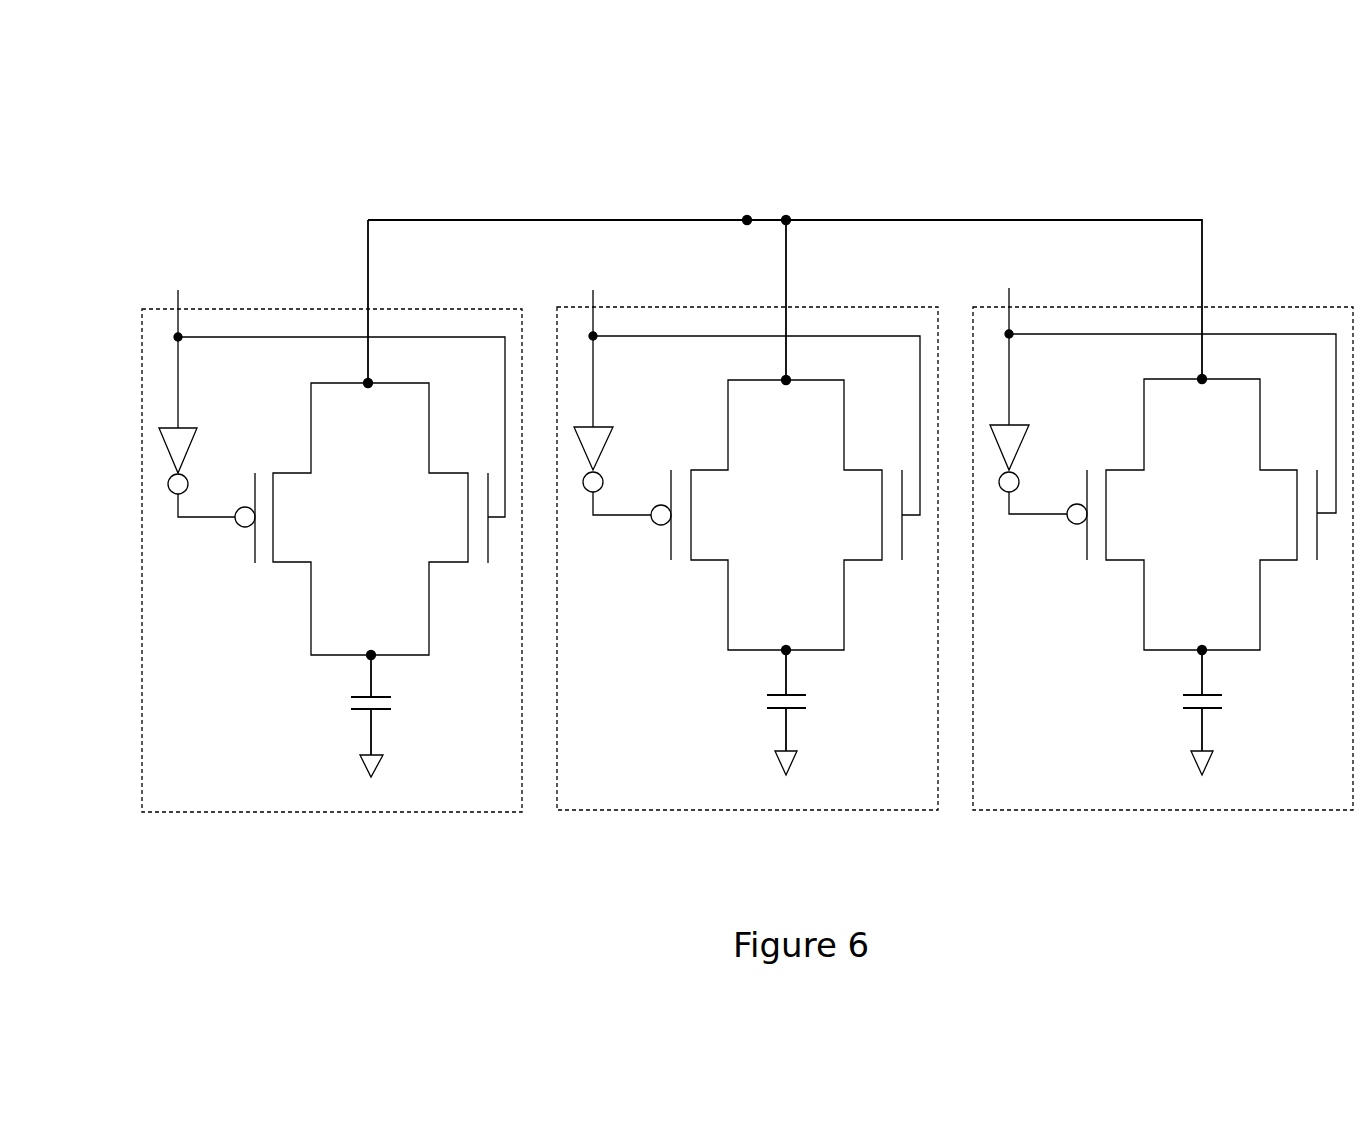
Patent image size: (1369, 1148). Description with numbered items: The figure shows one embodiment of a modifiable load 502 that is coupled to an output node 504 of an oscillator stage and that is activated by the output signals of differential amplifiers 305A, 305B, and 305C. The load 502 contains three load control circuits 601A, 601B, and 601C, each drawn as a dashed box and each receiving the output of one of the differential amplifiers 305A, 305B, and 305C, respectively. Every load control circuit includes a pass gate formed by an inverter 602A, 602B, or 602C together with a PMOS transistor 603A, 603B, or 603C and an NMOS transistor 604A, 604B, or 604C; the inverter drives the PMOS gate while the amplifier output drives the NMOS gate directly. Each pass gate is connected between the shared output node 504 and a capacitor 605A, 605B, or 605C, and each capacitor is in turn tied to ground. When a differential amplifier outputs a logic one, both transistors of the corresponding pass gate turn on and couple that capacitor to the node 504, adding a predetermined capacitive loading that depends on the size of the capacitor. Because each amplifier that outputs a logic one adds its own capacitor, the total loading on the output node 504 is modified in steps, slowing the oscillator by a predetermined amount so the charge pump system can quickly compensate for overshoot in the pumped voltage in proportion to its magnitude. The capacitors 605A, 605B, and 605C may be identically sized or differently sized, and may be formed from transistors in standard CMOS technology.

The load 502 is at (1042, 162).
The output node 504 is at (747, 220).
The differential amplifier 305A is at (330, 375).
The differential amplifier 305B is at (743, 373).
The differential amplifier 305C is at (1162, 372).
The load control circuit 601A is at (303, 812).
The load control circuit 601B is at (721, 810).
The load control circuit 601C is at (1145, 810).
The inverter 602A is at (208, 477).
The inverter 602B is at (622, 476).
The inverter 602C is at (1038, 474).
The PMOS transistor 603A is at (314, 517).
The PMOS transistor 603B is at (731, 513).
The PMOS transistor 603C is at (1147, 513).
The NMOS transistor 604A is at (428, 519).
The NMOS transistor 604B is at (844, 515).
The NMOS transistor 604C is at (1259, 514).
The capacitor 605A is at (407, 714).
The capacitor 605B is at (821, 711).
The capacitor 605C is at (1236, 711).